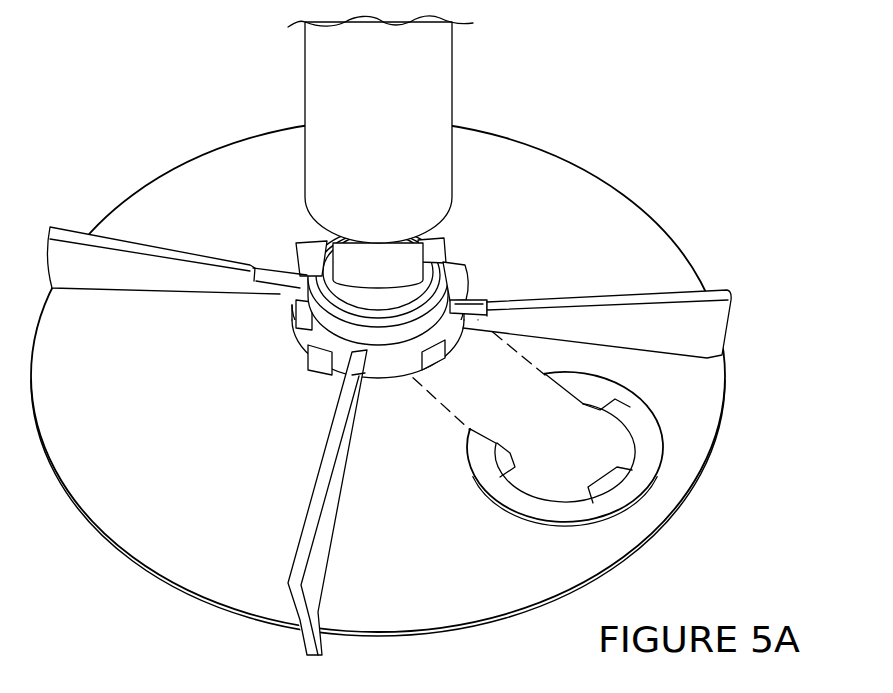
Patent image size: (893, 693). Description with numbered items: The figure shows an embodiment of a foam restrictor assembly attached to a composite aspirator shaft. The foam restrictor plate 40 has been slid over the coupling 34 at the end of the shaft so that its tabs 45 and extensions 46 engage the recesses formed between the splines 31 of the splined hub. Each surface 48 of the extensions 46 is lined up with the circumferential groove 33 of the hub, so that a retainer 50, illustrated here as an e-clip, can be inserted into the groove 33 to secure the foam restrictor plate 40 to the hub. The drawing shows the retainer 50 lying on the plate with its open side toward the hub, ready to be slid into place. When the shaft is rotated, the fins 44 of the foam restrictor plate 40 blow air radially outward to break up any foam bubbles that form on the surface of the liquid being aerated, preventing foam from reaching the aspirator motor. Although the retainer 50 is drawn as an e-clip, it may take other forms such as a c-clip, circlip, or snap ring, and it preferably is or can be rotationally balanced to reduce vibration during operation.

The splines 31 is at (326, 358).
The circumferential groove 33 is at (312, 328).
The coupling 34 is at (440, 83).
The foam restrictor plate 40 is at (637, 126).
The fins 44 is at (652, 298).
The tabs 45 is at (428, 366).
The extensions 46 is at (467, 283).
The surface 48 is at (480, 303).
The retainer 50 is at (623, 488).